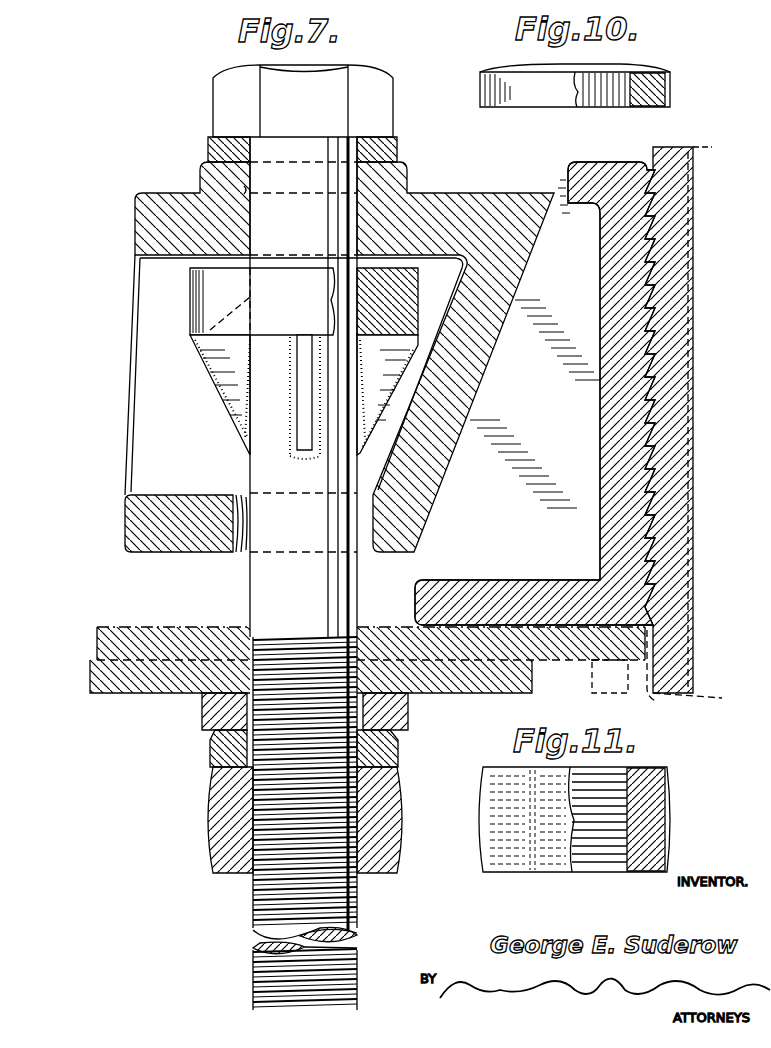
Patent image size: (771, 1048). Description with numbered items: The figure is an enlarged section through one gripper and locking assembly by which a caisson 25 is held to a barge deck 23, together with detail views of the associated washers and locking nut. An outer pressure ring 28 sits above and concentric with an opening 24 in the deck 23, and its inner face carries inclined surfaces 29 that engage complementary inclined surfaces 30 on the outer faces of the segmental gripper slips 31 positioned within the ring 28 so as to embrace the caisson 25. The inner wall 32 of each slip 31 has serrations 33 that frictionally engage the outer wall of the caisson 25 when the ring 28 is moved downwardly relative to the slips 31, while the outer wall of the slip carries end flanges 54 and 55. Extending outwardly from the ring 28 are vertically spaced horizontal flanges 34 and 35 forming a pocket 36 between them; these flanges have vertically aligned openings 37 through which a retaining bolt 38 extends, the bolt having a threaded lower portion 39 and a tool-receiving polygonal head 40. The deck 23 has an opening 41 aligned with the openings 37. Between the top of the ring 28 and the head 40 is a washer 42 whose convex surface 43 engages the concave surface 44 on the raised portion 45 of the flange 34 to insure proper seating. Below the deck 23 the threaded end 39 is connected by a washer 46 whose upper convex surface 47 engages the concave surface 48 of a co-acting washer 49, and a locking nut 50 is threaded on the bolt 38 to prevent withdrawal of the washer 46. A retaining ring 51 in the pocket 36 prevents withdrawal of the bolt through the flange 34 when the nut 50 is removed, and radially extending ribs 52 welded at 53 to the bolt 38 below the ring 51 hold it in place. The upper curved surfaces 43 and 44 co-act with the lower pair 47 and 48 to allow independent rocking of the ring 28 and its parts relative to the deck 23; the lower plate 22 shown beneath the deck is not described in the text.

In FIG. 7, the lower plate 22 is at (135, 697).
In FIG. 7, the deck 23 is at (155, 628).
In FIG. 7, the opening in the deck 24 is at (658, 702).
In FIG. 7, the caisson 25 is at (697, 434).
In FIG. 7, the outer pressure ring 28 is at (472, 192).
In FIG. 7, the inclined surfaces 29 is at (548, 225).
In FIG. 7, the inclined surfaces 30 is at (572, 180).
In FIG. 7, the segmental gripper slips 31 is at (640, 243).
In FIG. 7, the inner wall of the slip 32 is at (680, 162).
In FIG. 7, the serrations 33 is at (655, 300).
In FIG. 7, the upper horizontal flange 34 is at (150, 228).
In FIG. 7, the lower horizontal flange 35 is at (130, 530).
In FIG. 7, the pocket 36 is at (137, 408).
In FIG. 7, the openings in the flanges 37 is at (245, 190).
In FIG. 7, the retaining bolt 38 is at (262, 605).
In FIG. 7, the threaded lower portion 39 is at (258, 947).
In FIG. 7, the polygonal head 40 is at (235, 92).
In FIG. 7, the opening in the deck 41 is at (358, 636).
In FIG. 7, the washer 42 is at (385, 150).
In FIG. 7, the convex surface 43 is at (215, 148).
In FIG. 7, the concave surface 44 is at (215, 180).
In FIG. 7, the raised portion 45 is at (405, 186).
In FIG. 7, the washer 46 is at (388, 760).
In FIG. 10, the washer 46 is at (668, 88).
In FIG. 7, the upper convex surface 47 is at (213, 738).
In FIG. 10, the upper convex surface 47 is at (640, 68).
In FIG. 7, the concave surface 48 is at (215, 748).
In FIG. 7, the co-acting washer 49 is at (210, 728).
In FIG. 7, the locking nut 50 is at (215, 848).
In FIG. 11, the locking nut 50 is at (668, 800).
In FIG. 7, the retaining ring 51 is at (195, 302).
In FIG. 7, the radially extending ribs 52 is at (300, 425).
In FIG. 7, the weld 53 is at (247, 456).
In FIG. 7, the end flange 54 is at (612, 180).
In FIG. 7, the end flange 55 is at (480, 600).